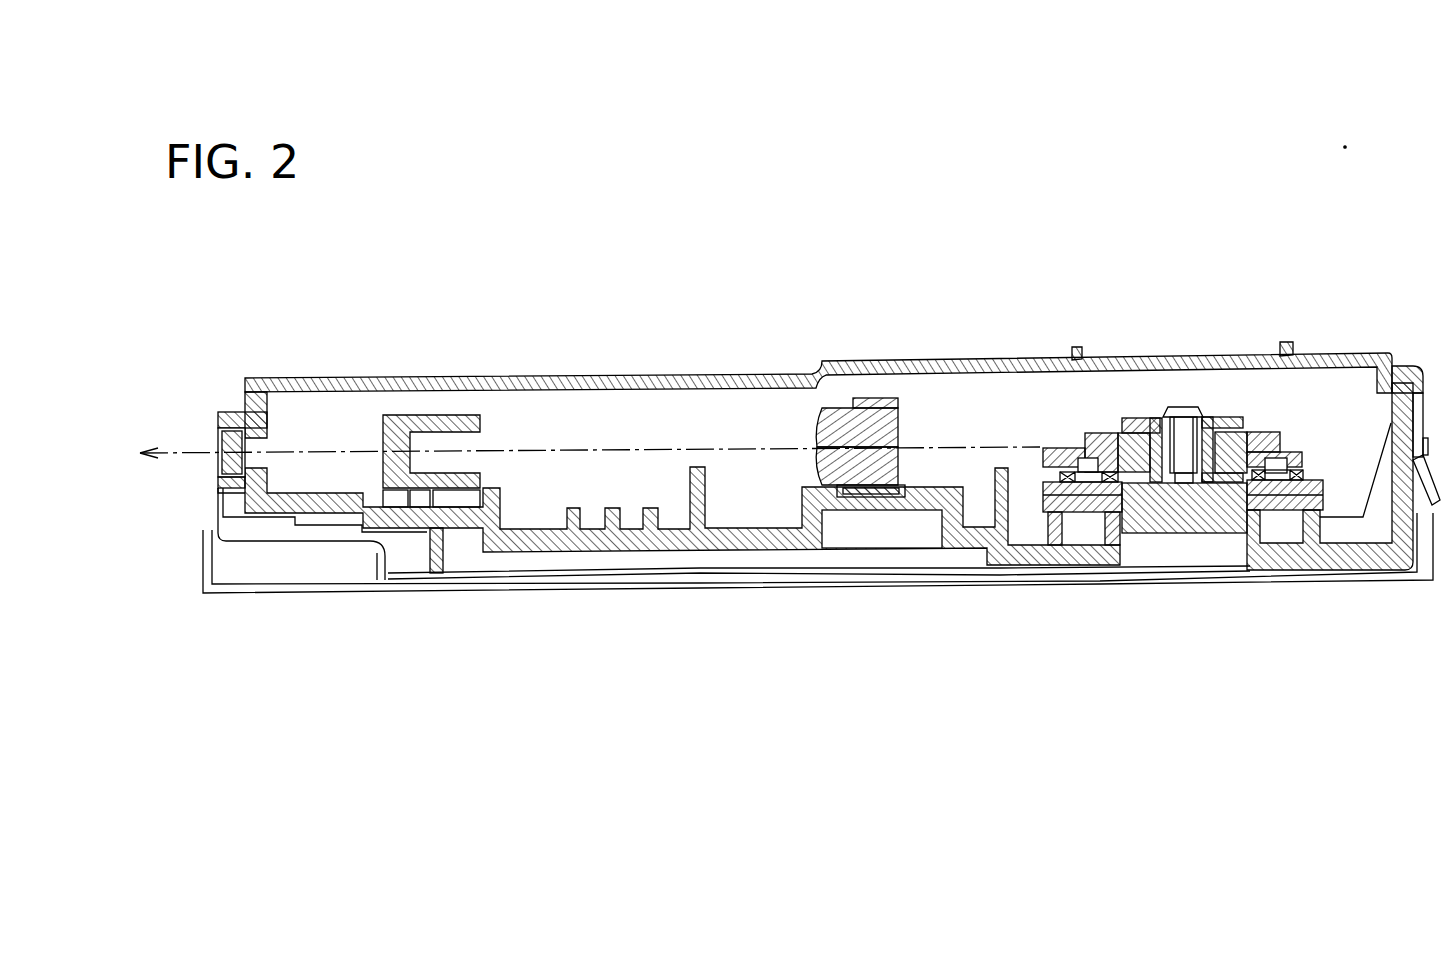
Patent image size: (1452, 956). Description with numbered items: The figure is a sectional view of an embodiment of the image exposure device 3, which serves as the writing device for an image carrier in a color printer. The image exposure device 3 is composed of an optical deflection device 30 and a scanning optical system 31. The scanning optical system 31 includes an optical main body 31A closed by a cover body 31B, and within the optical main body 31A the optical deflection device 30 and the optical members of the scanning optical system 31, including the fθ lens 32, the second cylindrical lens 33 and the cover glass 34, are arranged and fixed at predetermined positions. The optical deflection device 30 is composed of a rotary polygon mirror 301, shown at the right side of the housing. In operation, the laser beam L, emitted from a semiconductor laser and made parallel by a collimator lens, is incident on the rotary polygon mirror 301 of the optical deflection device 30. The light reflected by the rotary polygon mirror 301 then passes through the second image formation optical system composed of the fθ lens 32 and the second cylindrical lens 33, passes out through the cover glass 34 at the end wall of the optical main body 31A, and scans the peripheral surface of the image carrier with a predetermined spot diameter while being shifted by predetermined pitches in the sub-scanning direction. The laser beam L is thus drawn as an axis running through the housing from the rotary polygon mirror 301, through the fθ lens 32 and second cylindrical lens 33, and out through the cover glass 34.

The image exposure device 3 is at (907, 324).
The optical deflection device 30 is at (1178, 390).
The rotary polygon mirror 301 is at (1098, 430).
The scanning optical system 31 is at (496, 431).
The optical main body 31A is at (740, 550).
The cover body 31B is at (637, 376).
The fθ lens 32 is at (823, 407).
The second cylindrical lens 33 is at (443, 413).
The cover glass 34 is at (218, 441).
The laser beam L is at (982, 447).